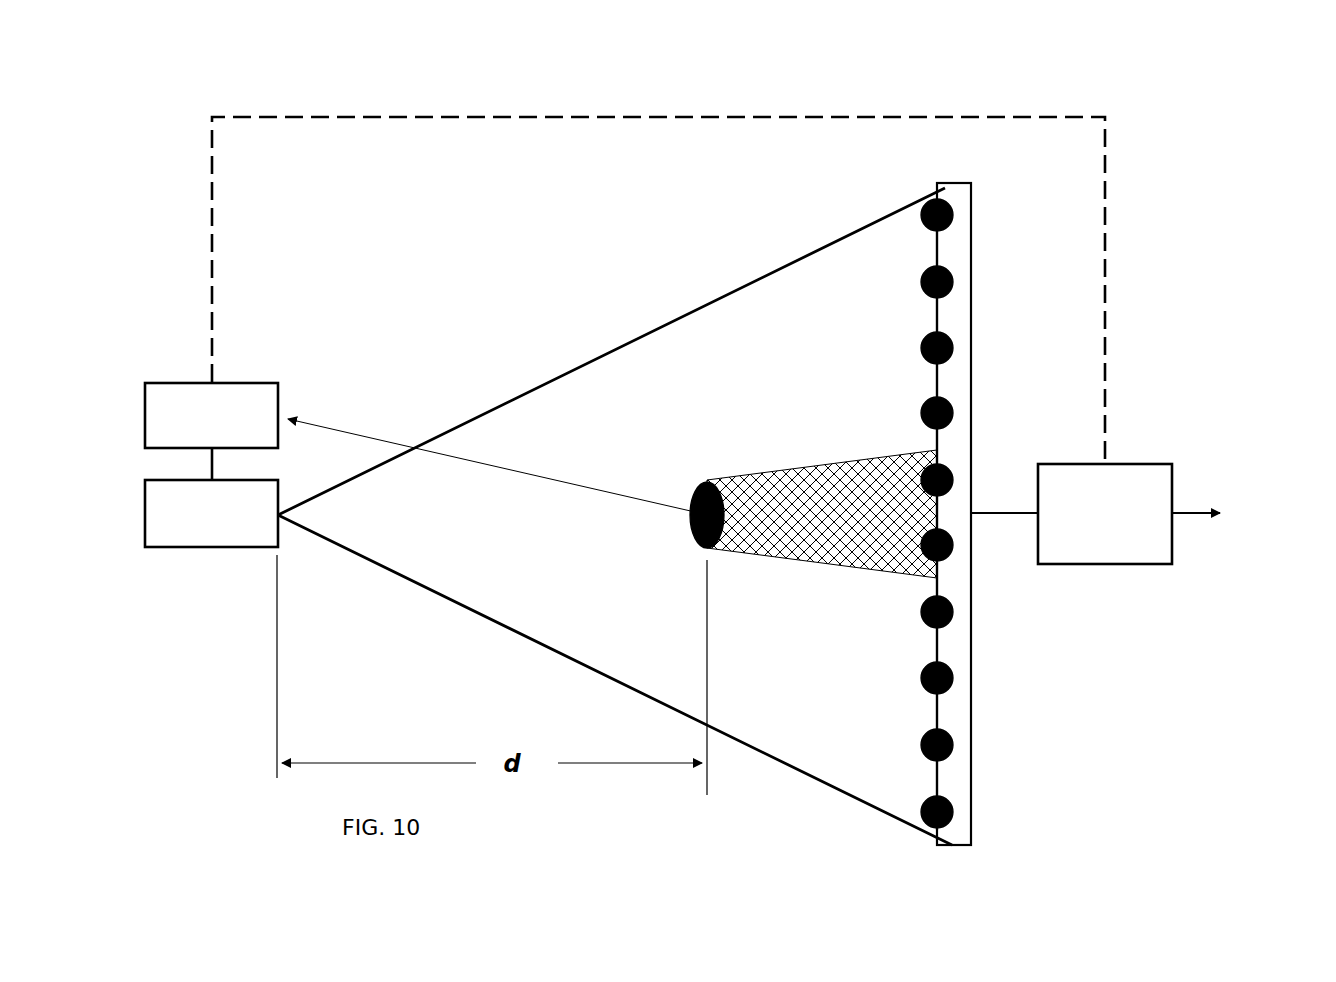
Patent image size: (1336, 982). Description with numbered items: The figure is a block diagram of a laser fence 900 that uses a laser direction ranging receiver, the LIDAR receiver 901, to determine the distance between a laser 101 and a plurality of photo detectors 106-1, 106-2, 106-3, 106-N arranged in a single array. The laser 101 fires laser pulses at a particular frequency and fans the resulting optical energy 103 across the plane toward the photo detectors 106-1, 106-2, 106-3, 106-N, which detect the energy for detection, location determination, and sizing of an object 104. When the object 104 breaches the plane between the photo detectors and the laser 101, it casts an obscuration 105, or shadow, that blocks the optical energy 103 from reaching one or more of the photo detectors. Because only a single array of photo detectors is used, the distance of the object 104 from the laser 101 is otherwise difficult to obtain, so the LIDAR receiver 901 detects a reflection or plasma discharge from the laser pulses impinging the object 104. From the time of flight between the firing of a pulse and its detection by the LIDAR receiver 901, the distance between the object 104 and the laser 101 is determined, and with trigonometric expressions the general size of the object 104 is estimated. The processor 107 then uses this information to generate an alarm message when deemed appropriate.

The laser fence 900 is at (1148, 160).
The LIDAR receiver 901 is at (420, 447).
The laser 101 is at (211, 513).
The optical energy 103 is at (552, 445).
The object 104 is at (705, 485).
The obscuration 105 is at (878, 490).
The photo detector 106-1 is at (955, 219).
The photo detector 106-2 is at (955, 284).
The photo detector 106-3 is at (955, 415).
The photo detector 106-N is at (955, 812).
The processor 107 is at (1175, 514).